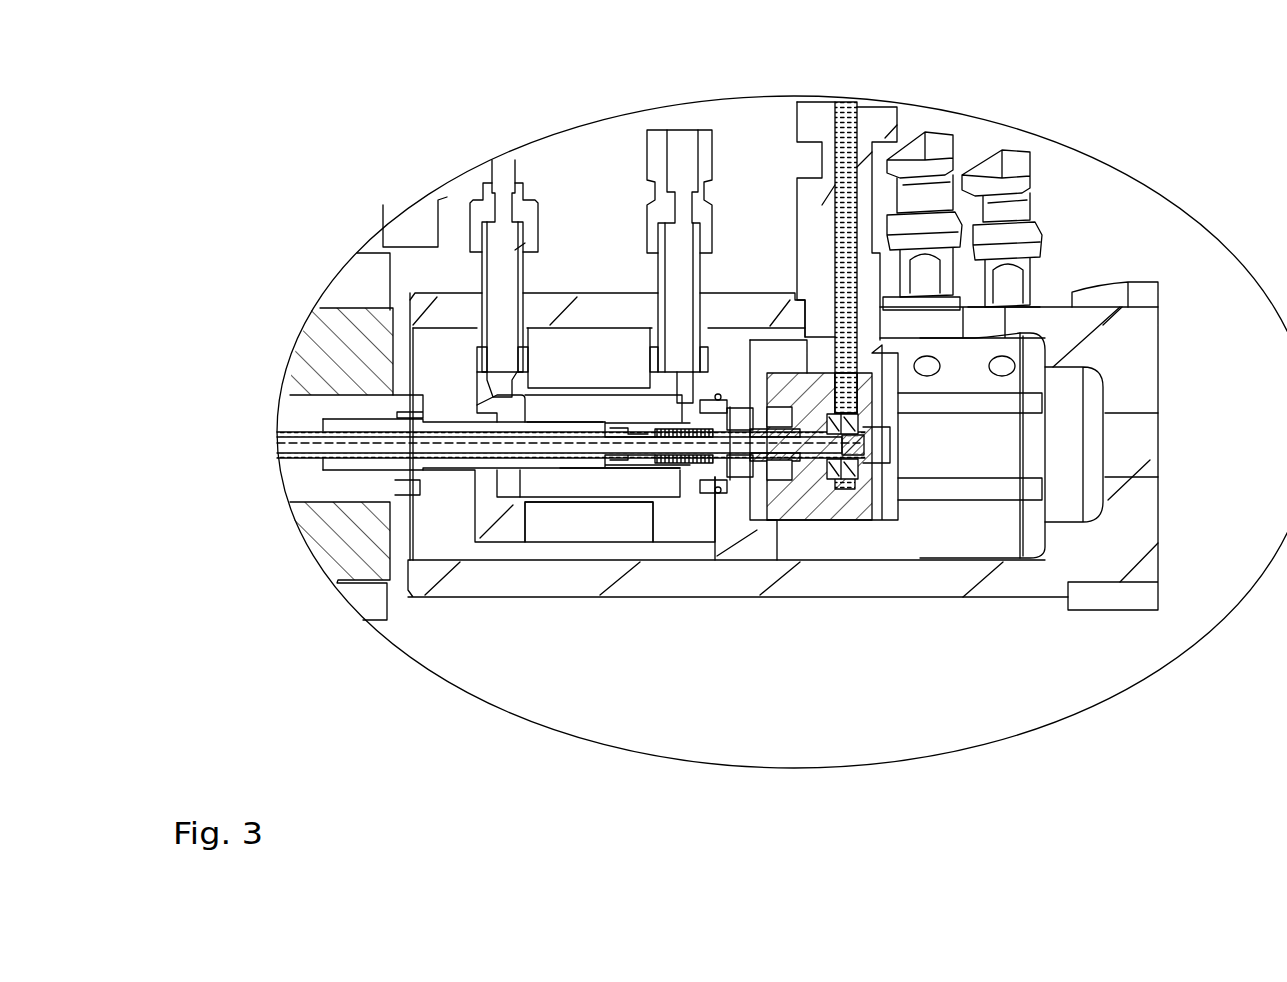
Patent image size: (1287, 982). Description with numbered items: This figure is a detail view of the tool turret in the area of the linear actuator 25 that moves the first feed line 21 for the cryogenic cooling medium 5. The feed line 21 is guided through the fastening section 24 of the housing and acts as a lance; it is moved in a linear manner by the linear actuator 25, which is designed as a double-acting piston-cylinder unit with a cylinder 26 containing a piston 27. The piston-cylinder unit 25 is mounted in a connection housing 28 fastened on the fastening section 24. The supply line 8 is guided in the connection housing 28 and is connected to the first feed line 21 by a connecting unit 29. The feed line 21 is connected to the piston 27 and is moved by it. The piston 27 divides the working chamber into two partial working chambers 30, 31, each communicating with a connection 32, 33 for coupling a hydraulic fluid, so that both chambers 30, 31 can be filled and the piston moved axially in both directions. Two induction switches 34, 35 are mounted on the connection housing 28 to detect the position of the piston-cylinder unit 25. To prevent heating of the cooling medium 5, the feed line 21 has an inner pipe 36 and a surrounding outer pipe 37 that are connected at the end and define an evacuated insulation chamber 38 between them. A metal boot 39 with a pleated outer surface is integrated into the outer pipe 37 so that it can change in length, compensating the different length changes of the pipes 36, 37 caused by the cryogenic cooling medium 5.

The cryogenic cooling medium 5 is at (272, 445).
The supply line 8 is at (878, 115).
The first feed line 21 is at (300, 427).
The fastening section 24 is at (317, 538).
The linear actuator 25 is at (589, 237).
The cylinder 26 is at (703, 538).
The piston 27 is at (510, 487).
The connection housing 28 is at (983, 590).
The connecting unit 29 is at (855, 513).
The partial working chamber 30 is at (492, 385).
The partial working chamber 31 is at (553, 487).
The connection 32 is at (503, 197).
The connection 33 is at (682, 137).
The induction switch 34 is at (940, 148).
The induction switch 35 is at (1010, 155).
The inner pipe 36 is at (555, 437).
The outer pipe 37 is at (580, 400).
The insulation chamber 38 is at (601, 422).
The metal boot 39 is at (712, 413).